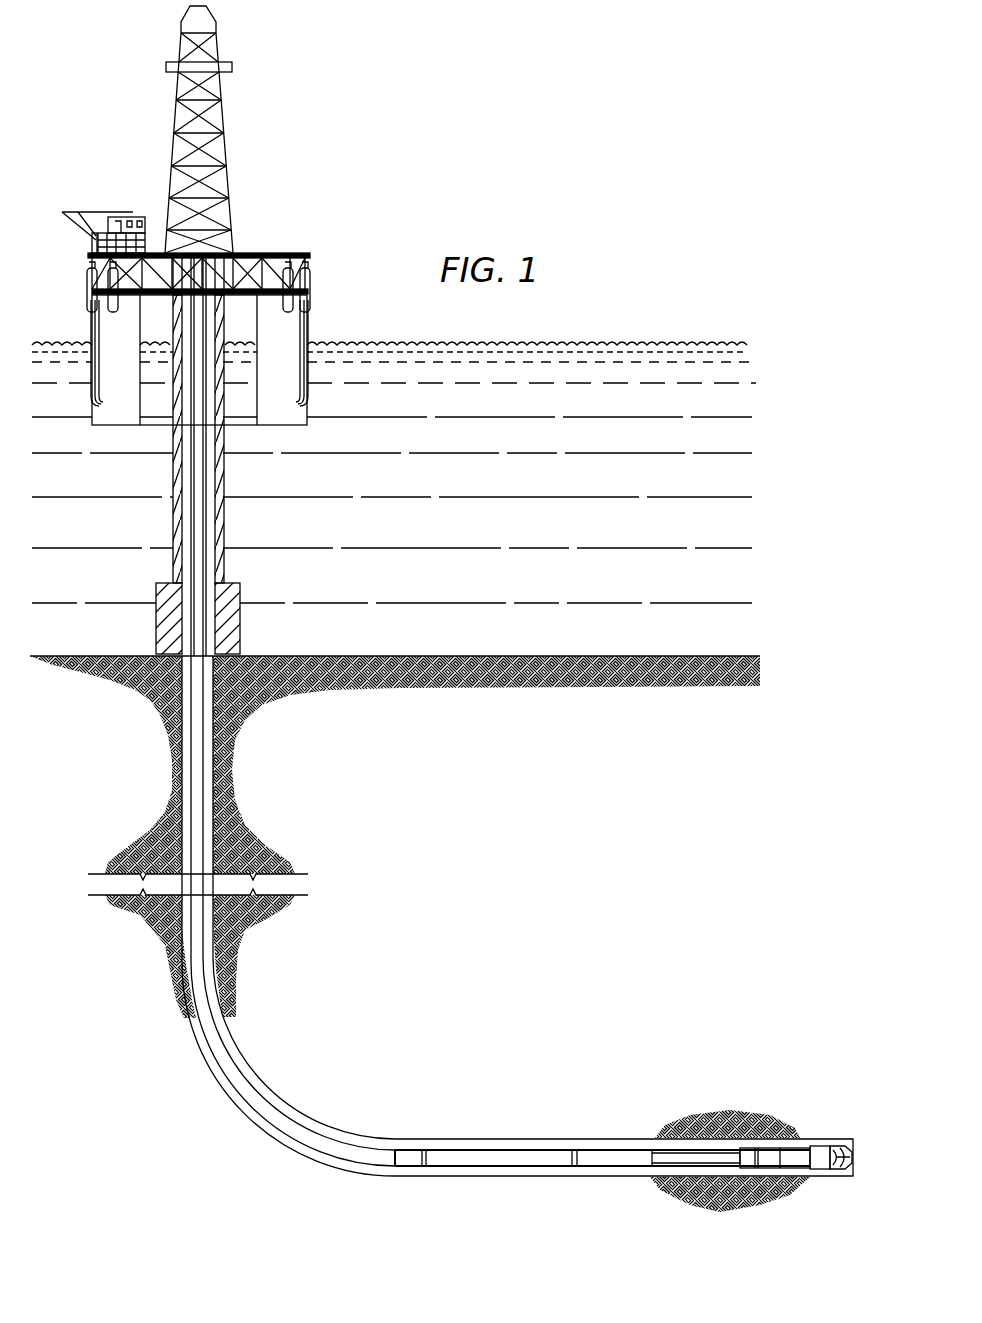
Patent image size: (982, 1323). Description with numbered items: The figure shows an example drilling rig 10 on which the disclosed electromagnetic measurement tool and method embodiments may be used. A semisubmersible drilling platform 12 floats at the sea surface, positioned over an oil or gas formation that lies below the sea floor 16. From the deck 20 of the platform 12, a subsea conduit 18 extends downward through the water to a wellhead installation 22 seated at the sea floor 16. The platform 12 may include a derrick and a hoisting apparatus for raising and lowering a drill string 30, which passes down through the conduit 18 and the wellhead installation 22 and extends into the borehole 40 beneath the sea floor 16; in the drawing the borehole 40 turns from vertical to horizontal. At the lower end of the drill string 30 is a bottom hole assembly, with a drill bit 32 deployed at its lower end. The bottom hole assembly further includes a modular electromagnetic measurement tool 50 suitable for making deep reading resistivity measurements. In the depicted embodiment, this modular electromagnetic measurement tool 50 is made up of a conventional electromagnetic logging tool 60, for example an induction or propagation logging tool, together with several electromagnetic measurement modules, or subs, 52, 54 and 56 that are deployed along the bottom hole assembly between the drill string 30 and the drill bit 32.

The drilling rig 10 is at (306, 133).
The semisubmersible drilling platform 12 is at (291, 252).
The sea floor 16 is at (450, 656).
The subsea conduit 18 is at (224, 521).
The deck 20 is at (305, 292).
The wellhead installation 22 is at (240, 583).
The drill string 30 is at (200, 442).
The drill bit 32 is at (822, 1146).
The borehole 40 is at (182, 770).
The modular electromagnetic measurement tool 50 is at (782, 1110).
The electromagnetic measurement module 52 is at (757, 1170).
The electromagnetic measurement module 54 is at (574, 1172).
The electromagnetic measurement module 56 is at (424, 1172).
The electromagnetic logging tool 60 is at (697, 1170).